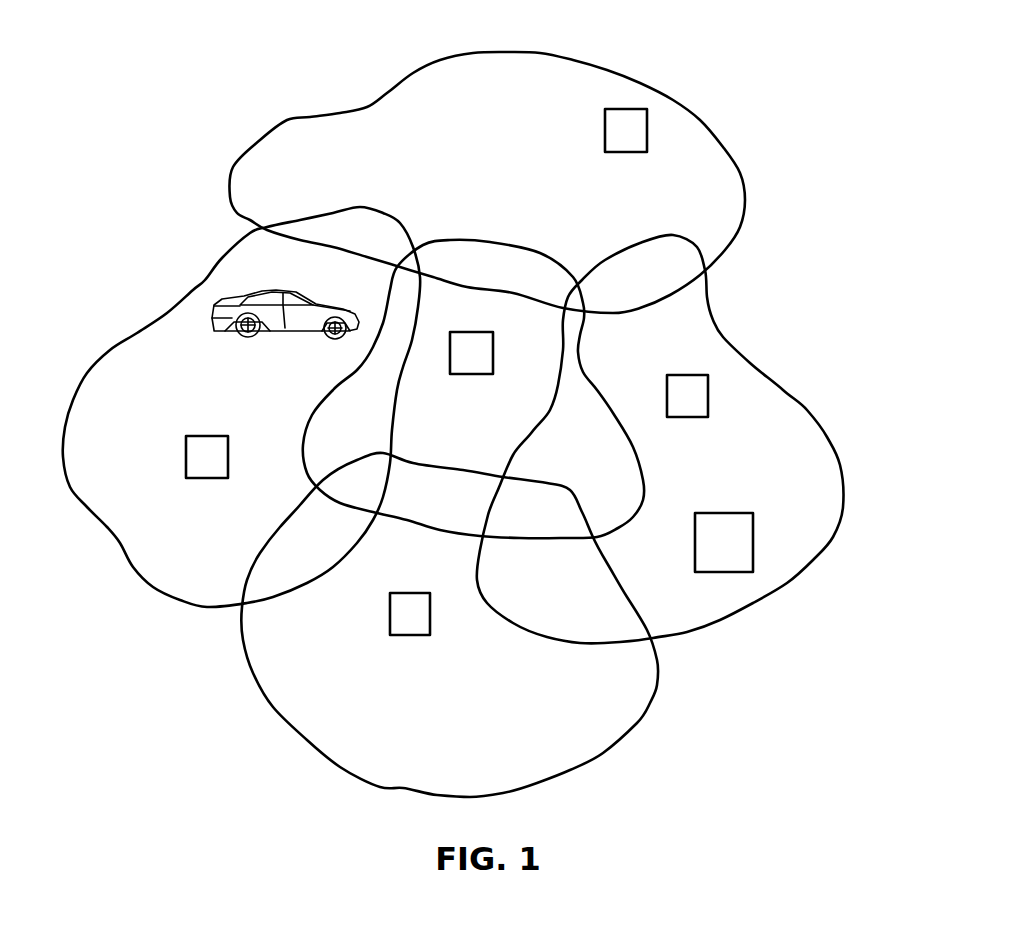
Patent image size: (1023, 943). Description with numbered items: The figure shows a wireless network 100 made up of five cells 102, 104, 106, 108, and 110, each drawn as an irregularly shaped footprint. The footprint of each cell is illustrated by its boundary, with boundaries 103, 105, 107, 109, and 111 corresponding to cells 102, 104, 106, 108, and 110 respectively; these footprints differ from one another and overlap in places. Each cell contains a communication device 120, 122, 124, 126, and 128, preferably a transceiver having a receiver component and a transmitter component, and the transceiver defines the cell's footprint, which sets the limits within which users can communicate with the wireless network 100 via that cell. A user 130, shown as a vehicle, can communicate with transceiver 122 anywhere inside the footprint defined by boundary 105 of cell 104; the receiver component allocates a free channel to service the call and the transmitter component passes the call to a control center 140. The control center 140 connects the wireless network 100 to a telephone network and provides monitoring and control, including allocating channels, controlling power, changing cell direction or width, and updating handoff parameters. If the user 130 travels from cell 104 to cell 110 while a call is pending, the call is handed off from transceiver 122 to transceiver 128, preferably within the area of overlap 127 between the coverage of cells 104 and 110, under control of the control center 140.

The wireless network 100 is at (927, 238).
The cell 102 is at (487, 164).
The boundary 103 is at (558, 55).
The cell 104 is at (241, 407).
The boundary 105 is at (120, 543).
The cell 106 is at (685, 439).
The boundary 107 is at (837, 455).
The cell 108 is at (474, 625).
The boundary 109 is at (652, 702).
The cell 110 is at (479, 389).
The boundary 111 is at (597, 393).
The communication device 120 is at (627, 118).
The communication device 122 is at (213, 448).
The communication device 124 is at (408, 602).
The communication device 126 is at (687, 388).
The area of overlap 127 is at (356, 418).
The communication device 128 is at (467, 345).
The user 130 is at (217, 305).
The control center 140 is at (722, 523).